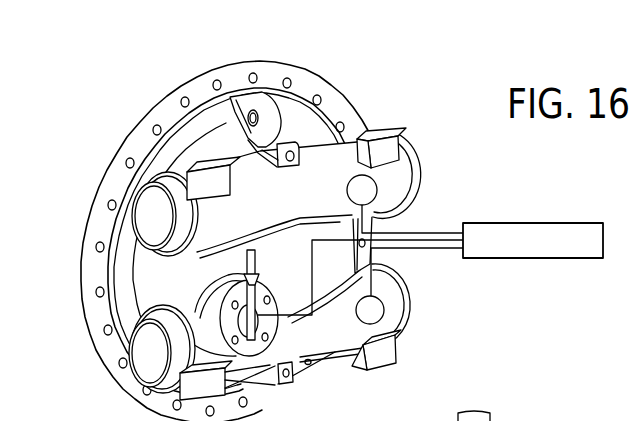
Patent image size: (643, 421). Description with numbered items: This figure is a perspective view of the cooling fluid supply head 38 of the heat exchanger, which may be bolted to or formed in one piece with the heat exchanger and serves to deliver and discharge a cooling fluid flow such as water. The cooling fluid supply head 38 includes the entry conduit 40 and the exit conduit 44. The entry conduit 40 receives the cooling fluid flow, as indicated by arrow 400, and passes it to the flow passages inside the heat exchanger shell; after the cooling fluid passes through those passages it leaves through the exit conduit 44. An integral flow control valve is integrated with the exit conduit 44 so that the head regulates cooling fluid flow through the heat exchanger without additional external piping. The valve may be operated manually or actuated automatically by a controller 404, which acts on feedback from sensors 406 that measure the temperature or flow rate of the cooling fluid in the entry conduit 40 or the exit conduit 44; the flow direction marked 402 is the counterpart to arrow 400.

The cooling fluid supply head 38 is at (358, 72).
The entry conduit 40 is at (340, 147).
The exit conduit 44 is at (330, 342).
The arrow 400 is at (488, 148).
The second sensor assembly 402 is at (430, 301).
The controller 404 is at (535, 223).
The sensor 406 is at (347, 191).